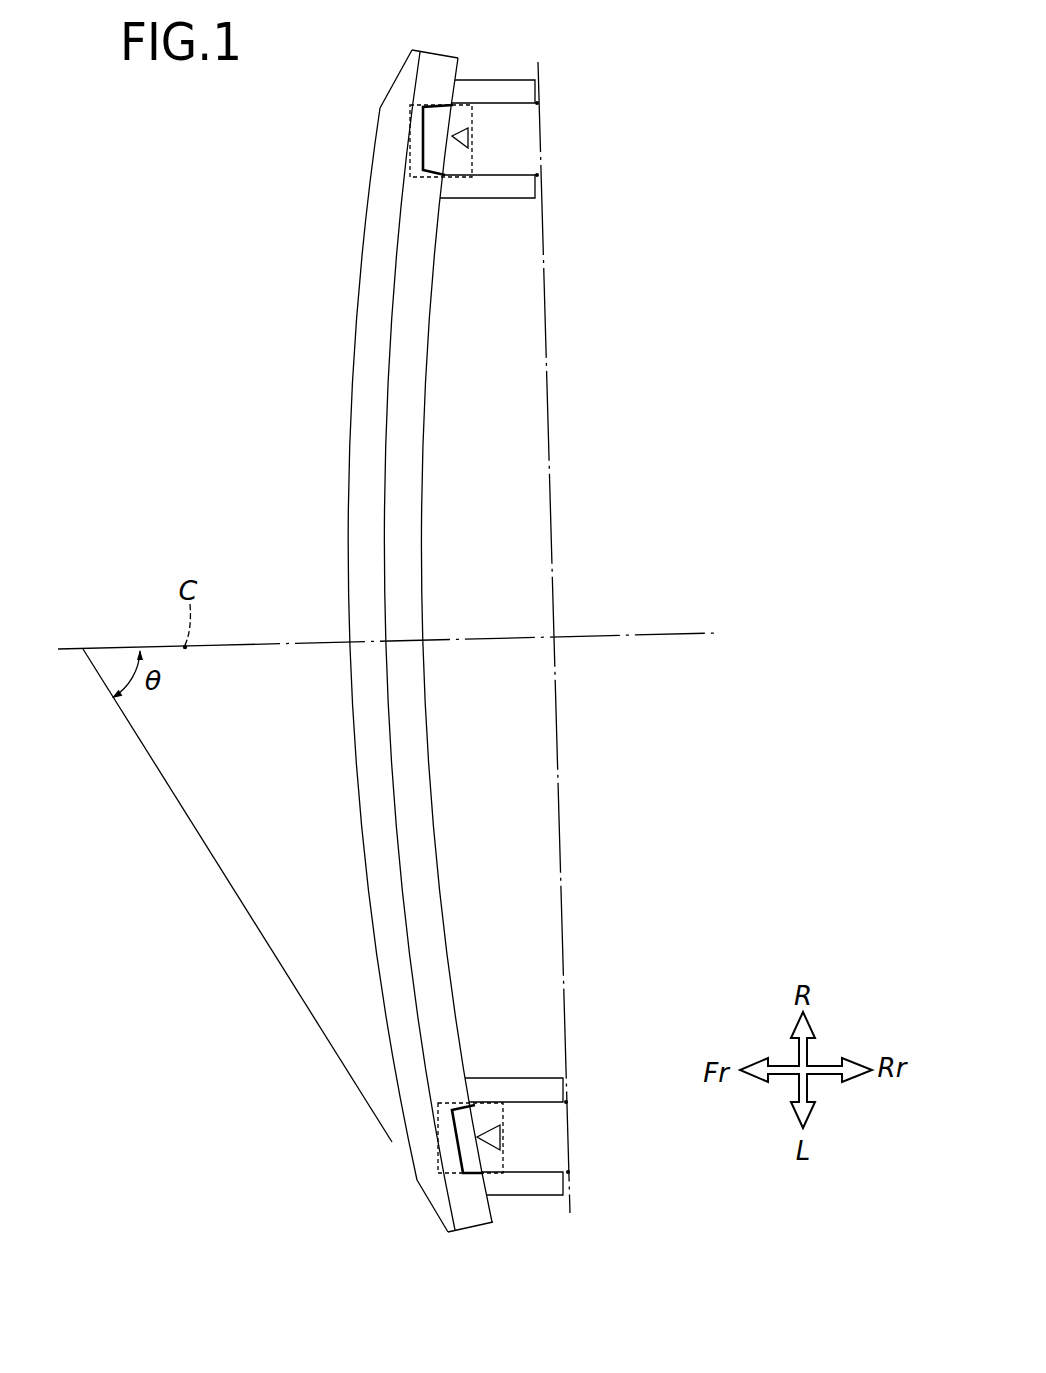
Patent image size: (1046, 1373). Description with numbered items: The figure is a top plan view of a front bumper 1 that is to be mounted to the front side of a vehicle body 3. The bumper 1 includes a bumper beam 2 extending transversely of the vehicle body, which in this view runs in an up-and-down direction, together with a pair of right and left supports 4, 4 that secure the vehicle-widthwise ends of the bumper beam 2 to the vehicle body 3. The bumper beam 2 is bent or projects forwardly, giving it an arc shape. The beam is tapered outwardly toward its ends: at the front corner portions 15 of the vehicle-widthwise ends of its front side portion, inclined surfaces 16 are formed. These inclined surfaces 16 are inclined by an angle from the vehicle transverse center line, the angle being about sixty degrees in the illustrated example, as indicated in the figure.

The bumper 1 is at (258, 500).
The bumper beam 2 is at (357, 591).
The vehicle body 3 is at (556, 722).
The support 4 is at (503, 202).
The front corner portion 15 is at (386, 92).
The inclined surface 16 is at (398, 76).